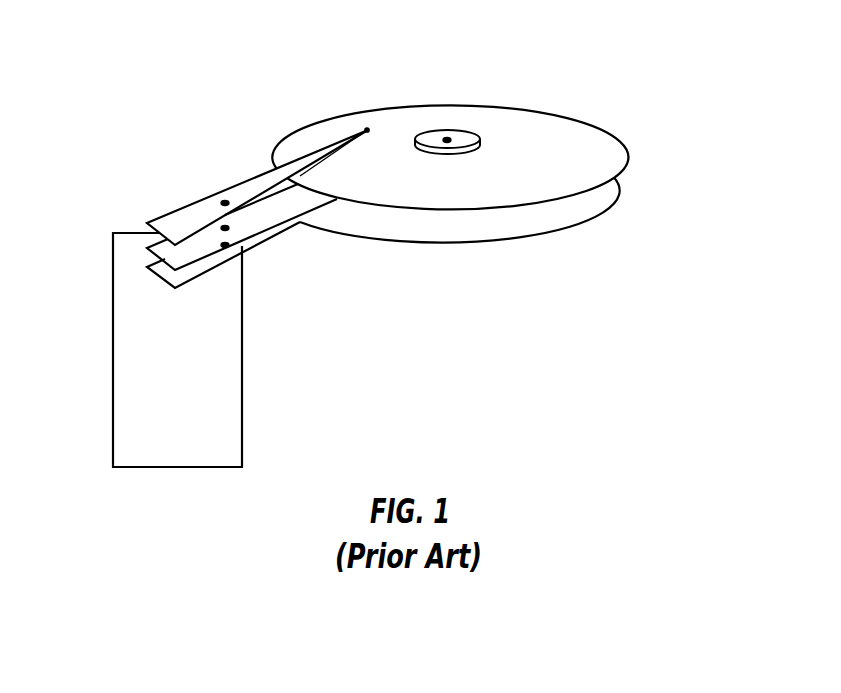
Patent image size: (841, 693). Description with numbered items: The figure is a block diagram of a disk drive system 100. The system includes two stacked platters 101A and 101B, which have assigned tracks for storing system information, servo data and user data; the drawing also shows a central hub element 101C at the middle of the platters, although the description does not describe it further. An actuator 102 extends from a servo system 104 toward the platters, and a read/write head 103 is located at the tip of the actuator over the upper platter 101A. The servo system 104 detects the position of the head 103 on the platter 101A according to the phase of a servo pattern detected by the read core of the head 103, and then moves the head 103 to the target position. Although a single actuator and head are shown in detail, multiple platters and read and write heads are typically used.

The disk drive system 100 is at (142, 77).
The platter 101A is at (610, 136).
The platter 101B is at (610, 223).
The spindle hub 101C is at (448, 137).
The actuator 102 is at (210, 205).
The read/write head 103 is at (367, 128).
The servo system 104 is at (242, 435).